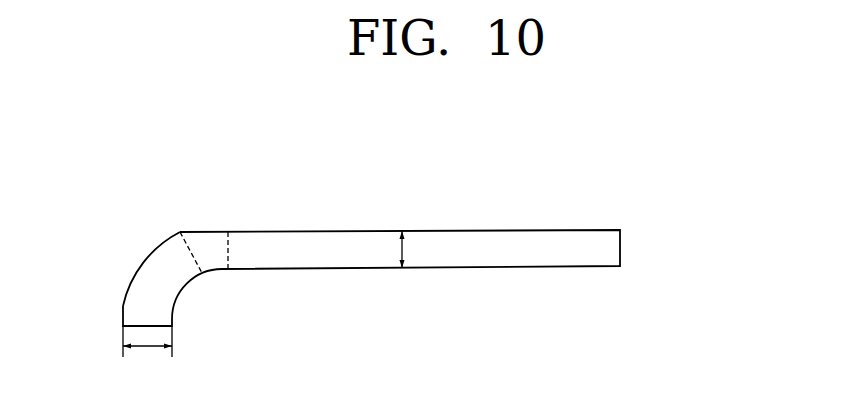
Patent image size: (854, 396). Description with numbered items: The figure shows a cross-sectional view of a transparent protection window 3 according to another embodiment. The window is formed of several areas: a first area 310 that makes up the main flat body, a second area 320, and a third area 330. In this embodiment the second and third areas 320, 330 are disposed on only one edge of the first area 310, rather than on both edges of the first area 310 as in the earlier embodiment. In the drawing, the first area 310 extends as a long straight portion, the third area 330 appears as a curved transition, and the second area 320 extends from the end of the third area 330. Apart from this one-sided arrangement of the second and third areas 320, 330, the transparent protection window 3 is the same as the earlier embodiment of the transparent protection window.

The transparent protection window 3 is at (728, 135).
The first area 310 is at (324, 245).
The second area 320 is at (133, 305).
The third area 330 is at (210, 243).